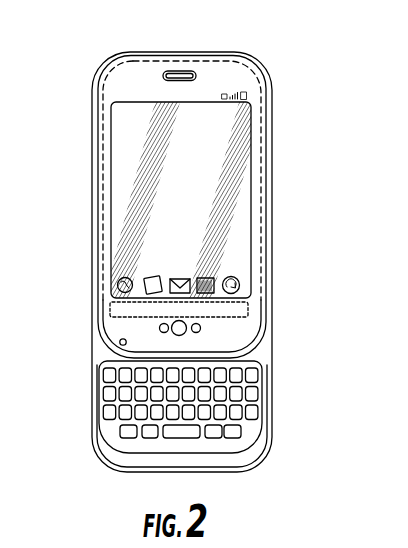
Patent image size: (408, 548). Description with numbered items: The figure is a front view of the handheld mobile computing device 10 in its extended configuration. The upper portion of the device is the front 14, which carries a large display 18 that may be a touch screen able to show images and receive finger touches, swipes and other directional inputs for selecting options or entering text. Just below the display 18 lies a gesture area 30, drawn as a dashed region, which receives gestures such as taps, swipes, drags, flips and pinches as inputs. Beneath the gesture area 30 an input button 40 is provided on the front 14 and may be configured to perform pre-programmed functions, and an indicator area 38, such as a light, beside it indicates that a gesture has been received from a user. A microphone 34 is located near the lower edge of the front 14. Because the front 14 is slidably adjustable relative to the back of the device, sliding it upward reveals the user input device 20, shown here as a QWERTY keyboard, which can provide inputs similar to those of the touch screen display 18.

The device 10 is at (206, 36).
The front 14 is at (224, 83).
The display 18 is at (240, 191).
The gesture area 30 is at (243, 312).
The input button 40 is at (171, 321).
The indicator area 38 is at (203, 328).
The microphone 34 is at (121, 344).
The user input device 20 is at (253, 391).